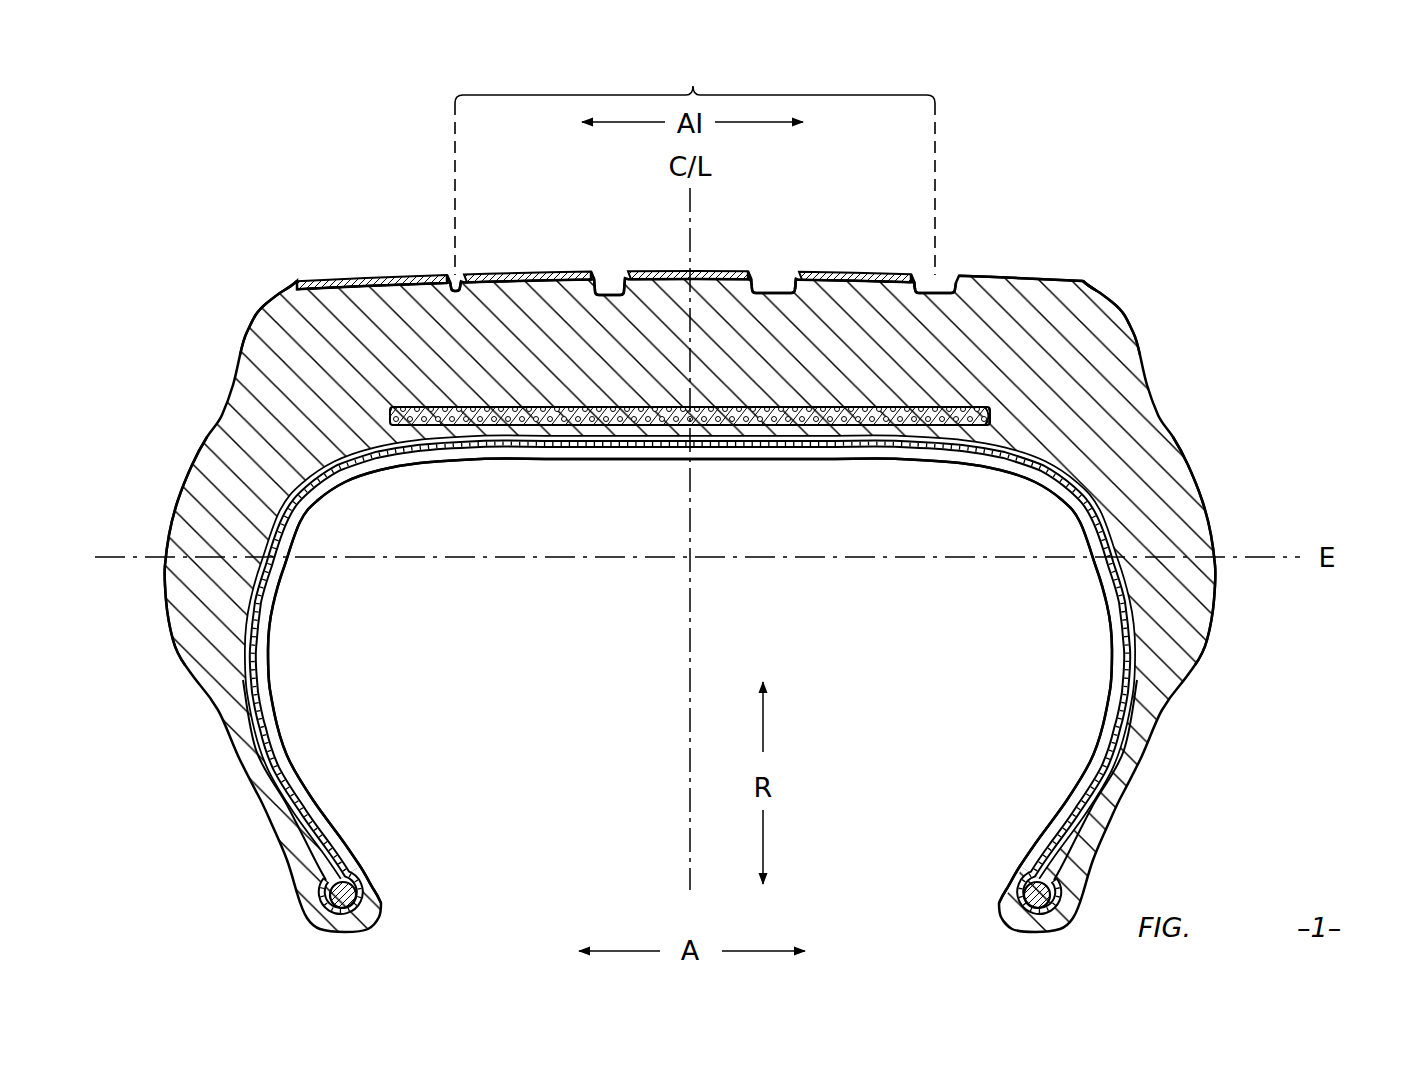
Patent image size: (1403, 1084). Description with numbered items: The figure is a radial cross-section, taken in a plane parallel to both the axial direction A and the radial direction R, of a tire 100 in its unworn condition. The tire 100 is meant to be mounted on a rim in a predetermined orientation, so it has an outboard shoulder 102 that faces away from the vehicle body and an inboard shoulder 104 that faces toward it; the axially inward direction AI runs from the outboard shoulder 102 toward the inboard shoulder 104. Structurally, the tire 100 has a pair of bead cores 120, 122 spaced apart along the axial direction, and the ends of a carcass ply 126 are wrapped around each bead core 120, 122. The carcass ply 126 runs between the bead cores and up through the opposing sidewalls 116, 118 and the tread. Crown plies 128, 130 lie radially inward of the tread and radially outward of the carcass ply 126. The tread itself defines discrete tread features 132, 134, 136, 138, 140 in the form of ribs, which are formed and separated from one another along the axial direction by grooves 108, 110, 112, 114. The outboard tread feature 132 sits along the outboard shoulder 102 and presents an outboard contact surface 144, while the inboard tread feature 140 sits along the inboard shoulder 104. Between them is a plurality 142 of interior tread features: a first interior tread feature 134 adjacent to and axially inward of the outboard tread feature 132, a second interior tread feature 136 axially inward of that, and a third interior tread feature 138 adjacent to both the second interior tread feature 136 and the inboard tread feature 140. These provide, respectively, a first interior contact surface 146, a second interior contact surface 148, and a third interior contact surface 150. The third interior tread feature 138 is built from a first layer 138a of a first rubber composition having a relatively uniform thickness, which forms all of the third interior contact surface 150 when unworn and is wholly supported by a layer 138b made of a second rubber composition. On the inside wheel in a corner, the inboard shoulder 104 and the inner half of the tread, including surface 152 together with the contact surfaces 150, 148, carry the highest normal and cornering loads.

The tire 100 is at (1292, 300).
The outboard shoulder 102 is at (211, 310).
The inboard shoulder 104 is at (1174, 309).
The groove 108 is at (453, 265).
The groove 110 is at (620, 258).
The groove 112 is at (765, 259).
The groove 114 is at (945, 256).
The sidewall 116 is at (160, 548).
The sidewall 118 is at (1217, 547).
The bead core 120 is at (356, 893).
The bead core 122 is at (1024, 893).
The carcass ply 126 is at (240, 678).
The crown ply 128 is at (990, 422).
The crown ply 130 is at (988, 416).
The outboard tread feature 132 is at (377, 296).
The first interior tread feature 134 is at (476, 285).
The second interior tread feature 136 is at (650, 283).
The third interior tread feature 138 is at (878, 292).
The first layer 138a is at (810, 262).
The second layer 138b is at (905, 262).
The inboard tread feature 140 is at (1003, 293).
The plurality of interior tread features 142 is at (695, 158).
The outboard contact surface 144 is at (302, 285).
The first interior contact surface 146 is at (523, 256).
The second interior contact surface 148 is at (721, 256).
The third interior contact surface 150 is at (835, 256).
The inboard contact surface 152 is at (1092, 268).